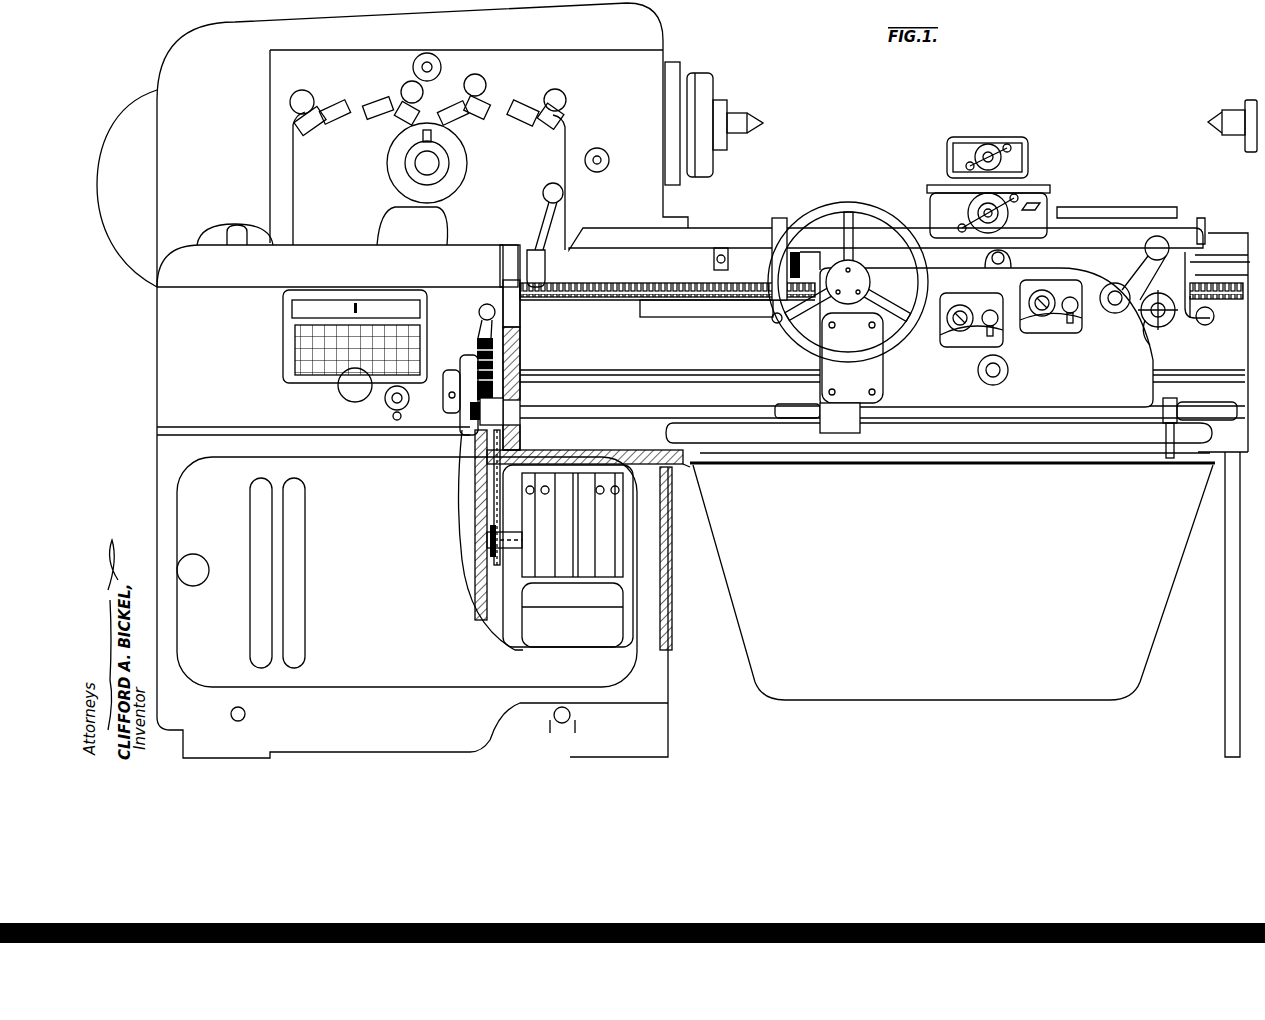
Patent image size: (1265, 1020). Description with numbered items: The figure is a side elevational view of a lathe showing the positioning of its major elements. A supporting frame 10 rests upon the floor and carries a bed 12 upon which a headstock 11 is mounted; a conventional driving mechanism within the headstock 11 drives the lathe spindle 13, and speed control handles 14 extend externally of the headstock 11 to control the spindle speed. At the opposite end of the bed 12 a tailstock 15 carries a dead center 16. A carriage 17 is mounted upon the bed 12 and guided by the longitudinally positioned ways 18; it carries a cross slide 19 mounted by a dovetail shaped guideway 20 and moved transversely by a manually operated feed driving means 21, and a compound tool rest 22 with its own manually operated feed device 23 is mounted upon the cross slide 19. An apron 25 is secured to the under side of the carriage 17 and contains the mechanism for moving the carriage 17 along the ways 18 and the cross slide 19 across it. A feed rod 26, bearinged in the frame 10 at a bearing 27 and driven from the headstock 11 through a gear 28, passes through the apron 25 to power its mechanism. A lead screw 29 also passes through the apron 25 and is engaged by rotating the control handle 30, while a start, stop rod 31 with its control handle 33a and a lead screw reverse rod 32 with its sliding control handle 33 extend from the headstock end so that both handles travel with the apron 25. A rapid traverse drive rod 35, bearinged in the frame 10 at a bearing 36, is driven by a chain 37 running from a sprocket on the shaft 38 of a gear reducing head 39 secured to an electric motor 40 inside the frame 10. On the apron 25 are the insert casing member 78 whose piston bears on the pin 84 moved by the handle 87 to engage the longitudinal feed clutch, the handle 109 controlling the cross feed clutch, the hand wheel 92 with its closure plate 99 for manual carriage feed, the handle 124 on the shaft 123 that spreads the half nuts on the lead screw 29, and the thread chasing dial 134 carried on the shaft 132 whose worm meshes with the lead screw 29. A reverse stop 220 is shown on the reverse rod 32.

The supporting frame 10 is at (520, 335).
The headstock 11 is at (225, 84).
The bed 12 is at (700, 237).
The lathe spindle 13 is at (740, 115).
The speed control handles 14 is at (406, 90).
The tailstock 15 is at (1253, 103).
The dead center 16 is at (1232, 122).
The carriage 17 is at (1098, 210).
The ways 18 is at (1225, 240).
The cross slide 19 is at (1040, 203).
The dovetail shaped guideway 20 is at (1030, 200).
The feed driving means 21 is at (1000, 228).
The compound tool rest 22 is at (1022, 140).
The feed device 23 is at (1003, 146).
The apron 25 is at (1105, 388).
The feed rod 26 is at (228, 358).
The feed rod bearing 27 is at (522, 370).
The gear 28 is at (477, 355).
The lead screw 29 is at (610, 303).
The control handle 30 is at (479, 312).
The start, stop rod 31 is at (788, 412).
The lead screw reverse rod 32 is at (672, 262).
The control handle 33 is at (1208, 325).
The control handle 33a is at (1183, 419).
The rapid traverse drive rod 35 is at (714, 412).
The rapid traverse rod bearing 36 is at (520, 408).
The chain 37 is at (478, 469).
The shaft 38 is at (490, 541).
The gear reducing head 39 is at (600, 520).
The electric motor 40 is at (580, 636).
The insert casing member 78 is at (943, 342).
The pin 84 is at (962, 312).
The handle 87 is at (992, 310).
The hand wheel 92 is at (862, 208).
The closure plate 99 is at (872, 283).
The handle 109 is at (1072, 320).
The shaft 123 is at (1130, 288).
The handle 124 is at (1133, 274).
The shaft 132 is at (1169, 317).
The thread chasing dial 134 is at (1169, 340).
The rack stop 220 is at (724, 250).